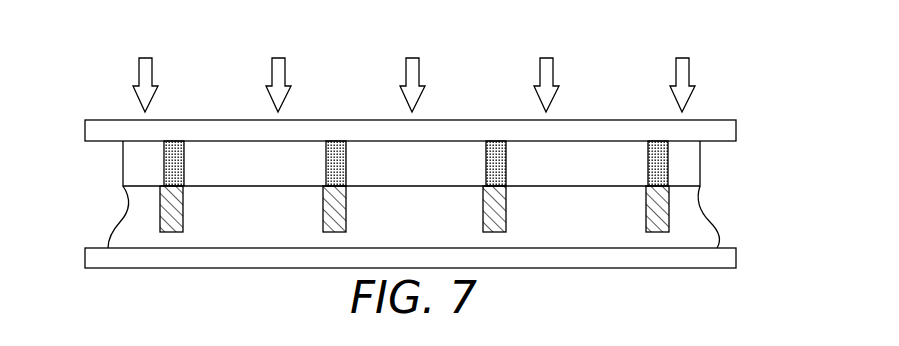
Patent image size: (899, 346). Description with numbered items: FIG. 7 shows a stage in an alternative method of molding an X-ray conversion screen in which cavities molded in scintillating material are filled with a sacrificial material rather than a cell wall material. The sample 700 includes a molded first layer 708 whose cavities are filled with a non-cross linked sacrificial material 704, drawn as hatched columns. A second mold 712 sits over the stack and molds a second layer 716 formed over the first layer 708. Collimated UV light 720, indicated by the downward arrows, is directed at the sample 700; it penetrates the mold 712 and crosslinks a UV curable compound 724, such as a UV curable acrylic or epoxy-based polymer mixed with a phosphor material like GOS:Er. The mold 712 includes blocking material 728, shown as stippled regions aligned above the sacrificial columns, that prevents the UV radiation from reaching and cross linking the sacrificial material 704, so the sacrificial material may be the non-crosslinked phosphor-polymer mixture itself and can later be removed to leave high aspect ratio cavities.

The sample 700 is at (722, 42).
The non-cross linked sacrificial material 704 is at (660, 212).
The molded first layer 708 is at (82, 188).
The second mold 712 is at (185, 125).
The second layer 716 is at (82, 142).
The collimated UV light 720 is at (690, 73).
The UV curable compound 724 is at (745, 115).
The blocking material 728 is at (184, 168).